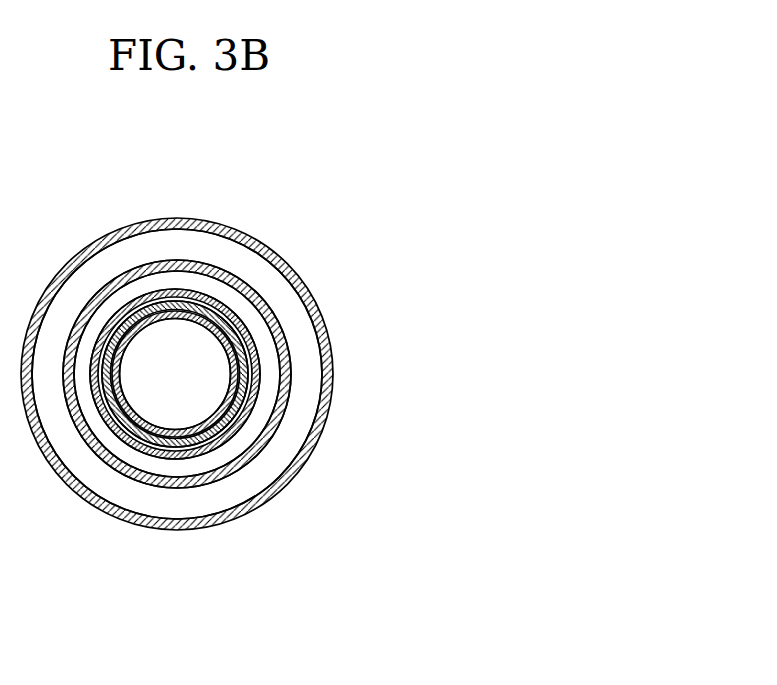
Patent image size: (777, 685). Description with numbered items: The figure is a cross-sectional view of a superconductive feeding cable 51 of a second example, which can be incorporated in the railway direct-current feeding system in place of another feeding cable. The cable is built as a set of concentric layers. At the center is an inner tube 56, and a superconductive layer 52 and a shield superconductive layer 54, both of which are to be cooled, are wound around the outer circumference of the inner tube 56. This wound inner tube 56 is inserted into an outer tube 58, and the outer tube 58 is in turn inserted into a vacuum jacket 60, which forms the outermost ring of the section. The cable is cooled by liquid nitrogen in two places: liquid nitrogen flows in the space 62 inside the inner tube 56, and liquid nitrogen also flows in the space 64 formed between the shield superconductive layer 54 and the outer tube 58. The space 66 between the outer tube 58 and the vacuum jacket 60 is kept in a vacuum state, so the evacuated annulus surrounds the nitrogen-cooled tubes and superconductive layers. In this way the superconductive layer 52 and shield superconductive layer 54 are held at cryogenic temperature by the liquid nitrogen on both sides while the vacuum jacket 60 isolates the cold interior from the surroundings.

The superconductive feeding cable 51 is at (302, 200).
The superconductive layer 52 is at (192, 443).
The shield superconductive layer 54 is at (162, 453).
The inner tube 56 is at (205, 433).
The outer tube 58 is at (253, 450).
The vacuum jacket 60 is at (300, 460).
The space in the inner pipe 62 is at (208, 340).
The space between the shield superconductive layer and the outer pipe 64 is at (265, 343).
The space between the outer pipe and the vacuum jacket 66 is at (310, 397).